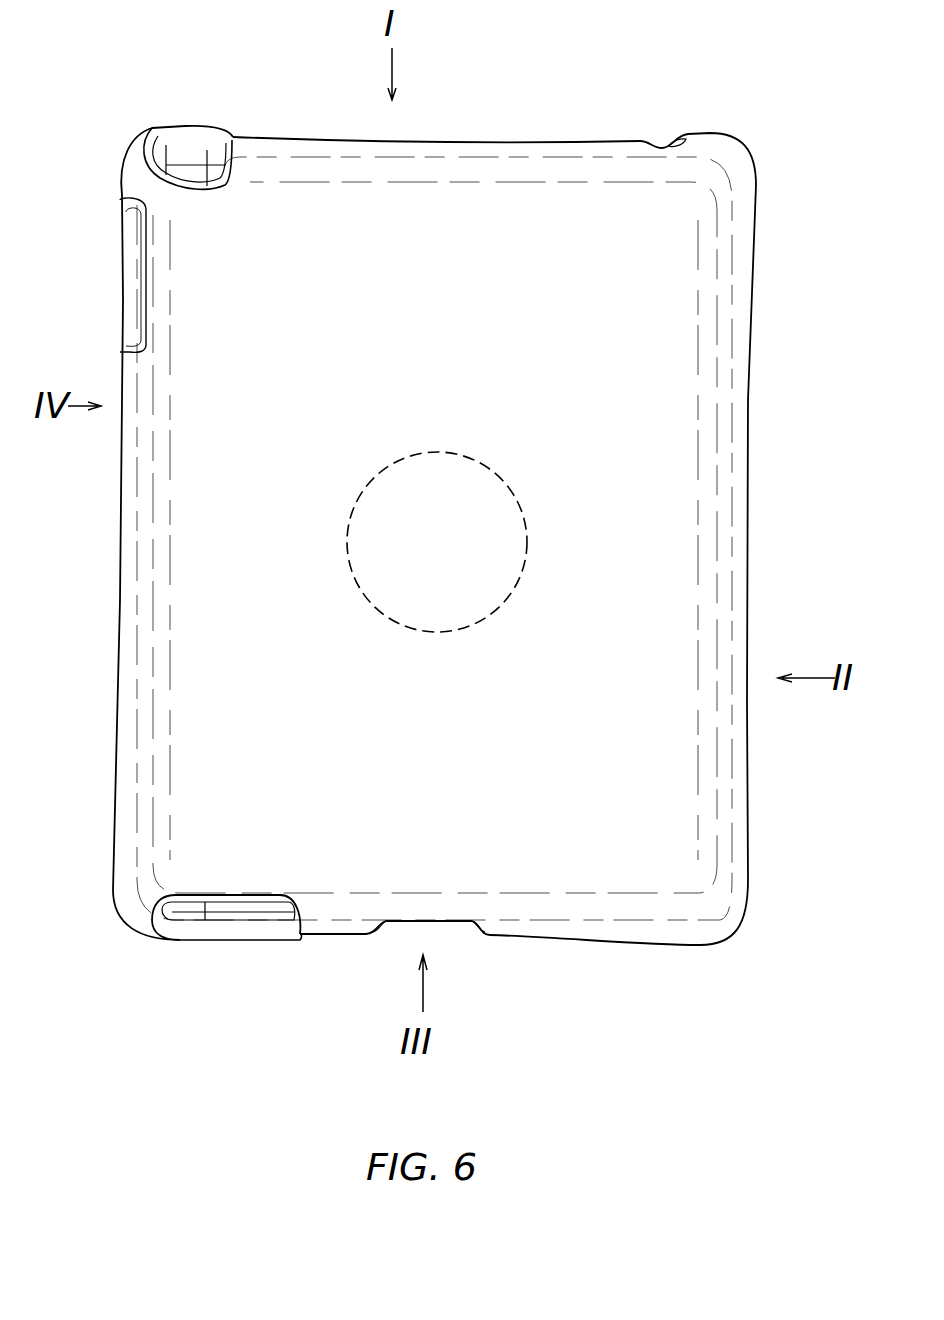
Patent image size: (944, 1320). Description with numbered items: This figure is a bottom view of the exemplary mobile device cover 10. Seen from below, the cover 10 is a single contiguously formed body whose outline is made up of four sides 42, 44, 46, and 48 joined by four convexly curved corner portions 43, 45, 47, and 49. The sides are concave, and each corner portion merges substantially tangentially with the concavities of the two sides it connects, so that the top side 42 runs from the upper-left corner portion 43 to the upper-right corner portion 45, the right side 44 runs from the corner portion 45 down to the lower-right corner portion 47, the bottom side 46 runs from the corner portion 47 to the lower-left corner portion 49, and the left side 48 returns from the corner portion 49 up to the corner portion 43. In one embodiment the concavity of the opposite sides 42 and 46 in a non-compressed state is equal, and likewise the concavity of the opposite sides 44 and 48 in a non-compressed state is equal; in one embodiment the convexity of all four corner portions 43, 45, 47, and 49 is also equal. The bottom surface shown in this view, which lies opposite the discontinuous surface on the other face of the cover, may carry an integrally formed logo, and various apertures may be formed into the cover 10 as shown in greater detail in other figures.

The cover 10 is at (131, 62).
The side 42 is at (484, 143).
The corner portion 43 is at (140, 137).
The side 44 is at (748, 423).
The corner portion 45 is at (742, 150).
The side 46 is at (560, 937).
The corner portion 47 is at (730, 942).
The side 48 is at (118, 615).
The corner portion 49 is at (118, 926).